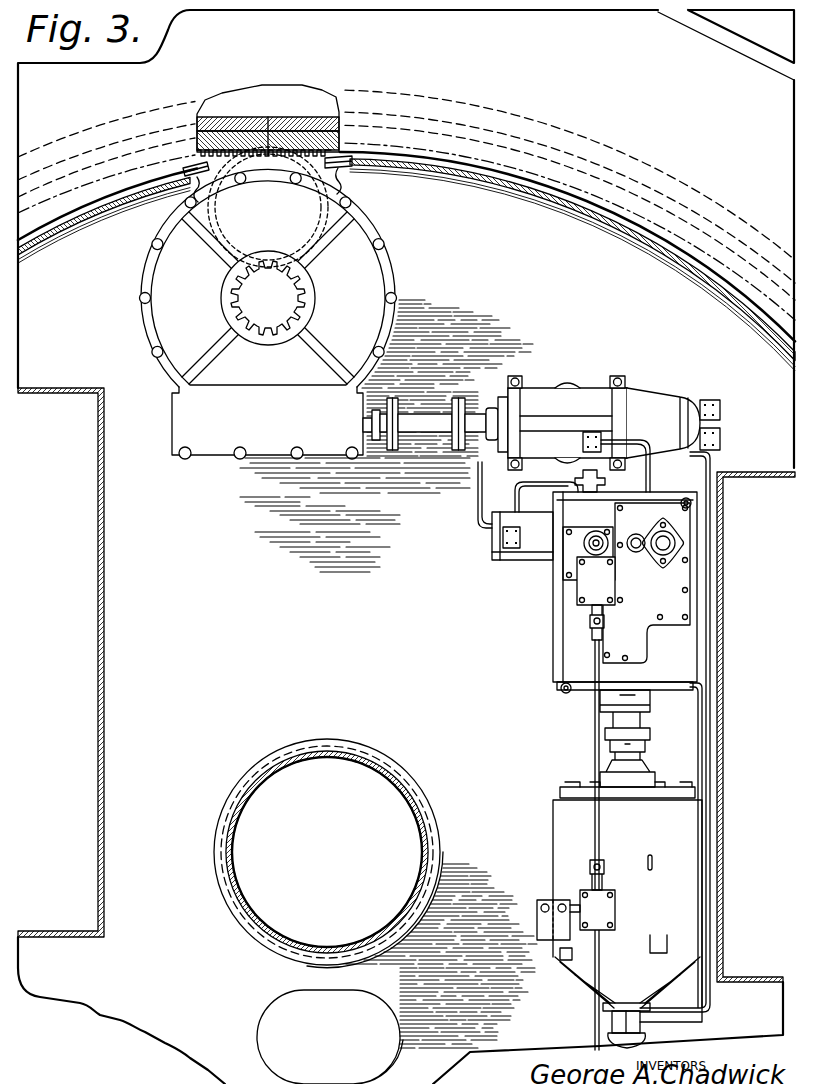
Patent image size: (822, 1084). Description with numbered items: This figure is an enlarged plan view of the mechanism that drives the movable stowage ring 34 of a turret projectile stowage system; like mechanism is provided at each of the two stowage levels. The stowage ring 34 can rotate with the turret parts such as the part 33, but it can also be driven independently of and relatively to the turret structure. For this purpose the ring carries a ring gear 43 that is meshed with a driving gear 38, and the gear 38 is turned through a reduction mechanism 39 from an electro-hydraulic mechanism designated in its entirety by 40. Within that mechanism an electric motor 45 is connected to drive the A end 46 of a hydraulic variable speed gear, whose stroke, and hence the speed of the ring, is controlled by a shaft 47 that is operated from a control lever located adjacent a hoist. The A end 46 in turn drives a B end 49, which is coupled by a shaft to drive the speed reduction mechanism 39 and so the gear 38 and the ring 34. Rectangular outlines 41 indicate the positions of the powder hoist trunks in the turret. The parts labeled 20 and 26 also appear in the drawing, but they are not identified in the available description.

The shaft 20 is at (427, 424).
The circular opening 26 is at (337, 800).
The part 33 is at (262, 653).
The movable stowage ring 34 is at (652, 96).
The gear 38 is at (278, 170).
The reduction mechanism 39 is at (282, 373).
The electro-hydraulic mechanism 40 is at (563, 518).
The powder hoist trunk 41 is at (70, 643).
The ring gear 43 is at (267, 130).
The electric motor 45 is at (657, 836).
The A end 46 is at (661, 609).
The shaft 47 is at (597, 745).
The B end 49 is at (672, 417).